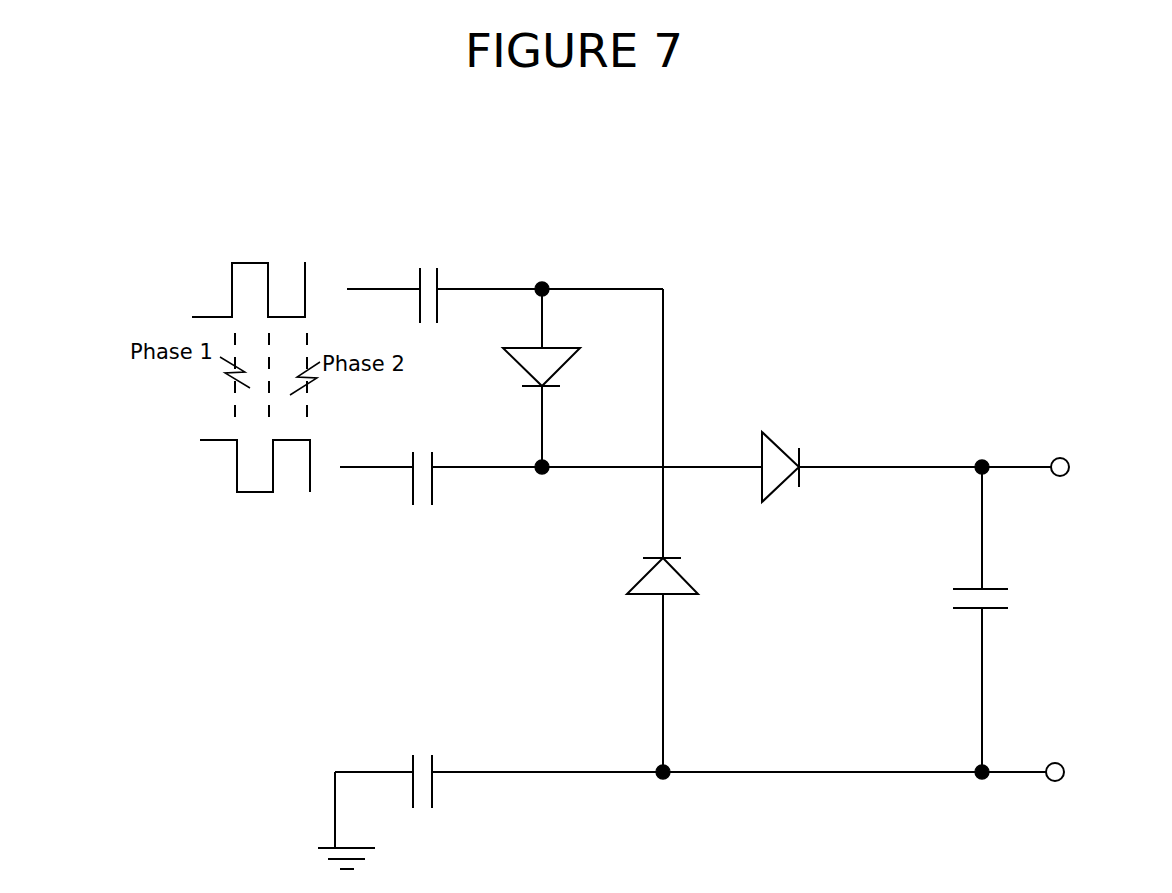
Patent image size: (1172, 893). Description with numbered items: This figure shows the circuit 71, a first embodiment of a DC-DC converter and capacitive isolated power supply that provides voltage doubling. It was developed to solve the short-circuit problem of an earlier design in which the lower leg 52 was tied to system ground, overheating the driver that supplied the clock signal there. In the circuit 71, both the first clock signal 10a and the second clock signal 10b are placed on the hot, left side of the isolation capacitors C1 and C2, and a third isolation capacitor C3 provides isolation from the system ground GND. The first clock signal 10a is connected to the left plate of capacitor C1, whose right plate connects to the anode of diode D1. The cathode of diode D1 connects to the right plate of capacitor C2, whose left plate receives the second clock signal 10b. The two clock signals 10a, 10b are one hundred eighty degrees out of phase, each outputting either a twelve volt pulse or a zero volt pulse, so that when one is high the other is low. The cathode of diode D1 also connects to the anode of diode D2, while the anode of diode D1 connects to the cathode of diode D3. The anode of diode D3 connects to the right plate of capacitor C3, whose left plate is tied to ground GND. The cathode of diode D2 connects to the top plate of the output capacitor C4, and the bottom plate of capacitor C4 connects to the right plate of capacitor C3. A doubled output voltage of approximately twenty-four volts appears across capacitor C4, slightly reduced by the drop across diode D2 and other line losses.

The first clock signal 10a is at (231, 259).
The second clock signal 10b is at (227, 440).
The circuit 71 is at (783, 449).
The lower leg 52 is at (936, 743).
The isolation capacitor C1 is at (392, 260).
The isolation capacitor C2 is at (386, 445).
The third isolation capacitor C3 is at (383, 746).
The output capacitor C4 is at (964, 619).
The diode D1 is at (566, 378).
The diode D2 is at (771, 433).
The diode D3 is at (643, 641).
The system ground GND is at (393, 820).